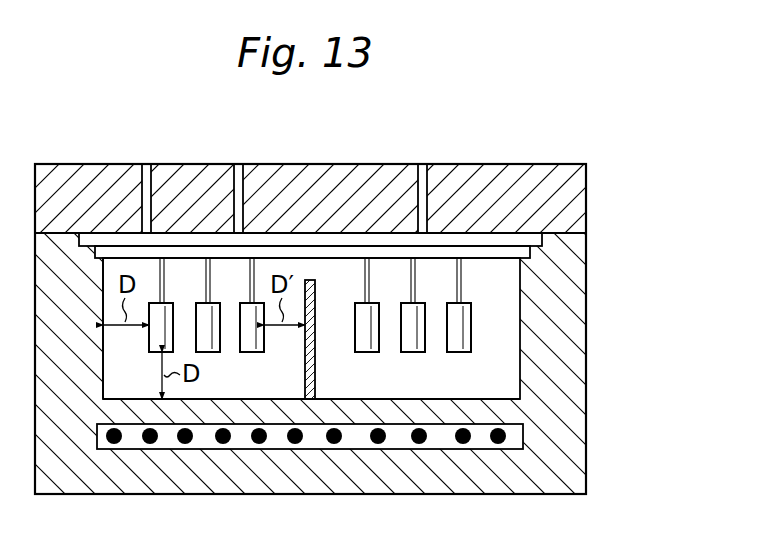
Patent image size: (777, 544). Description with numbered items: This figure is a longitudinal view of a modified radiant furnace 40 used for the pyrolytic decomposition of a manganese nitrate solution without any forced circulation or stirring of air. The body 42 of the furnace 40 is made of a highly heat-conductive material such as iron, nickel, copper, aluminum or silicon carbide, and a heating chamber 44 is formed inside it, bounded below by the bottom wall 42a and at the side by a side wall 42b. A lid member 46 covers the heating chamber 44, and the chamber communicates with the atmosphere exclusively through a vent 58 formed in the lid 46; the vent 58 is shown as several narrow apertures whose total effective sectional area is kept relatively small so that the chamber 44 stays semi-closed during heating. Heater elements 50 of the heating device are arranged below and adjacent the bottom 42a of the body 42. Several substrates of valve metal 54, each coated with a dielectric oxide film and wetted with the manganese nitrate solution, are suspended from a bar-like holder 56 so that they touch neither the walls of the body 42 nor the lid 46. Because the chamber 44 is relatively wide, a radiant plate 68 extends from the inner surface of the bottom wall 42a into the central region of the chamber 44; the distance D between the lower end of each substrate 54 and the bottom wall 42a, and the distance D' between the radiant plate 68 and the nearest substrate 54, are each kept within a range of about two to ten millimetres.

The furnace 40 is at (592, 246).
The body 42 is at (574, 348).
The bottom wall 42a is at (354, 406).
The side wall of housing 42b is at (104, 350).
The heating chamber 44 is at (486, 392).
The lid member 46 is at (293, 164).
The heater elements 50 is at (463, 449).
The valve metal 54 is at (252, 353).
The bar-like holder 56 is at (488, 258).
The vent 58 is at (240, 164).
The radiant plate 68 is at (316, 300).